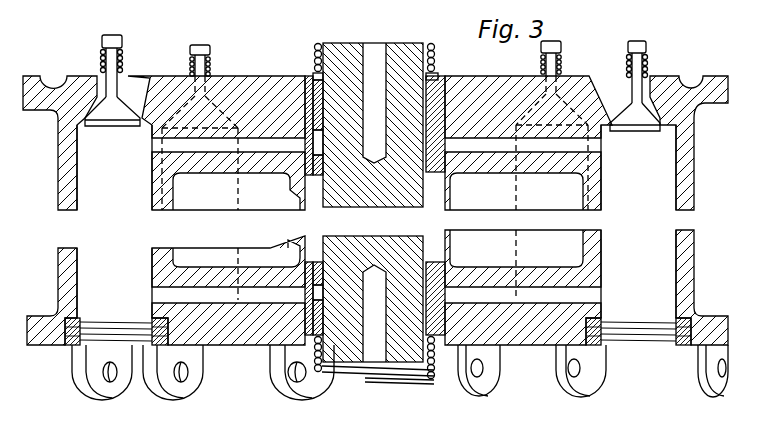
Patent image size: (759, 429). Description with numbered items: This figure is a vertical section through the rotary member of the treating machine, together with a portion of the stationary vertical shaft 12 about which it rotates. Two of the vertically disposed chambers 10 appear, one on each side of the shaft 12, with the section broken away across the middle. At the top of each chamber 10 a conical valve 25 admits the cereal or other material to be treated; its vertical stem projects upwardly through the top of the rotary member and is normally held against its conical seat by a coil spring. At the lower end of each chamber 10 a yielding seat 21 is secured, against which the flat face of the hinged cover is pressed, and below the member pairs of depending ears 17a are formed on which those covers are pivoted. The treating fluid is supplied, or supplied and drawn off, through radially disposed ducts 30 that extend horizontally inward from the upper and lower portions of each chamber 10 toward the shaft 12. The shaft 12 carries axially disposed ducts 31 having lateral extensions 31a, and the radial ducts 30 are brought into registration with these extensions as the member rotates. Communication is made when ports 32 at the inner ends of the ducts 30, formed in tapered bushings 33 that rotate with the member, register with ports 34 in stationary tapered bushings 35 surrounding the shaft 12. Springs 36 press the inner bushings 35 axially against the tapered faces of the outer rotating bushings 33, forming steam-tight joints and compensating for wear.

The chamber 10 is at (97, 282).
The stationary vertical shaft 12 is at (397, 60).
The depending ears 17a is at (98, 363).
The yielding seat 21 is at (68, 346).
The valve 25 is at (100, 115).
The radially disposed ducts 30 is at (248, 75).
The axially disposed ducts 31 is at (369, 72).
The lateral extensions 31a is at (335, 143).
The ports 32 is at (306, 142).
The tapered bushings 33 is at (303, 106).
The ports 34 is at (316, 143).
The stationary tapered bushings 35 is at (323, 98).
The springs 36 is at (437, 62).